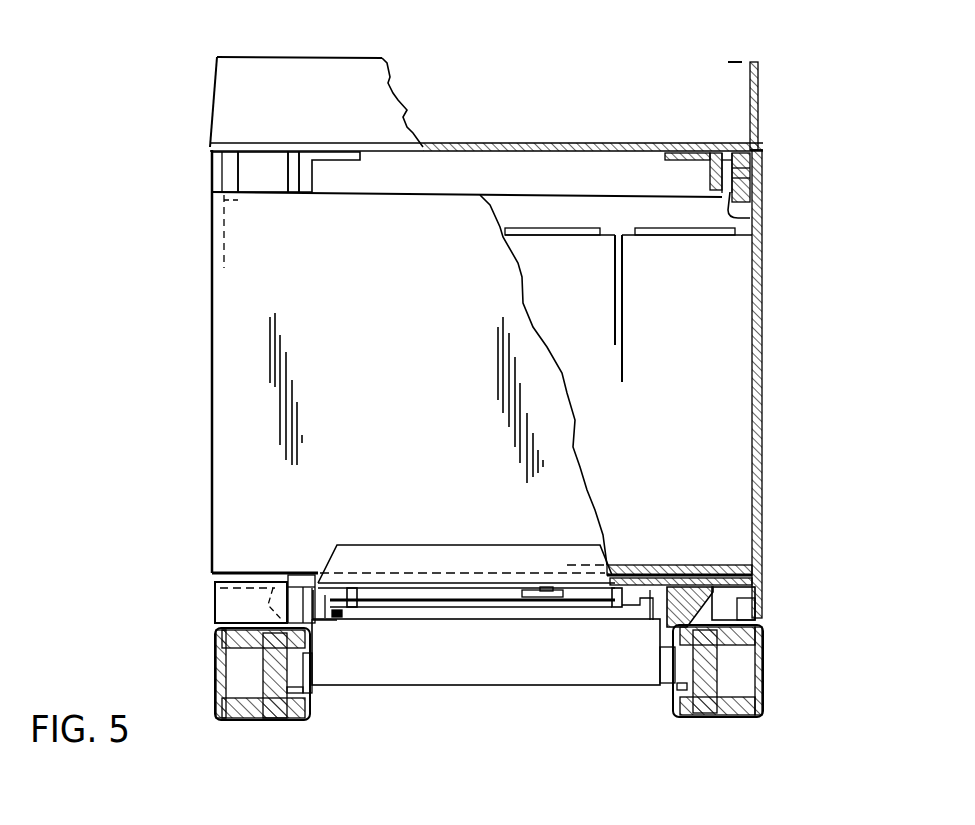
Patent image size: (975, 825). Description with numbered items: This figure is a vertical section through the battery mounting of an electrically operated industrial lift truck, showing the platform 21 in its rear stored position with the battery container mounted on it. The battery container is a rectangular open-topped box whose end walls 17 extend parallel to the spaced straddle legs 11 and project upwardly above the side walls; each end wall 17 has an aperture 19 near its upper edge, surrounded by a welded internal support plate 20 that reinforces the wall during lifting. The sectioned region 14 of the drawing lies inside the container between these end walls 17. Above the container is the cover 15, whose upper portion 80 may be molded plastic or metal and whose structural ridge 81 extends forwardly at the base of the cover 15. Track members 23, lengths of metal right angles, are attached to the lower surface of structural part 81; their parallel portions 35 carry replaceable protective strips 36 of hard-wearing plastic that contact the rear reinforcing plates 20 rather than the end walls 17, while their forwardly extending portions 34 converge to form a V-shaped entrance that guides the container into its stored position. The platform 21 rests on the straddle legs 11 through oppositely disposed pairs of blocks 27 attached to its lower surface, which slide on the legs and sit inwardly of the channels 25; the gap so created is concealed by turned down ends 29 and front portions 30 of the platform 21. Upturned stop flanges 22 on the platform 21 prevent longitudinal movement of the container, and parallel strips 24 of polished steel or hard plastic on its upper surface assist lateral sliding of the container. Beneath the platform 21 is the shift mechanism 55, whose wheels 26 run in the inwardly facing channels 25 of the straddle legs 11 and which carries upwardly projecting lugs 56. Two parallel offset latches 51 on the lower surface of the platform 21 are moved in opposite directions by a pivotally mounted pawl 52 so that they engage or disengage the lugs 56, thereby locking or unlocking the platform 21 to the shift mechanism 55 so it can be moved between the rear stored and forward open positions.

The straddle legs 11 is at (215, 672).
The cabinet housing 14 is at (722, 299).
The cover 15 is at (203, 77).
The end walls 17 is at (765, 343).
The apertures 19 is at (767, 170).
The internal support plate 20 is at (230, 173).
The platform 21 is at (623, 565).
The stop flanges 22 is at (480, 545).
The track members 23 is at (321, 200).
The parallel strips 24 is at (287, 587).
The channels 25 is at (303, 662).
The wheels 26 is at (300, 683).
The blocks 27 is at (318, 622).
The turned down ends 29 is at (220, 607).
The front portions 30 is at (228, 595).
The forwardly extending portions 34 is at (312, 173).
The parallel portions 35 is at (710, 172).
The protective strip 36 is at (262, 180).
The latches 51 is at (430, 606).
The pawl 52 is at (530, 600).
The shift mechanism 55 is at (440, 676).
The lugs 56 is at (330, 585).
The upper portion 80 is at (380, 92).
The structural ridge 81 is at (530, 143).